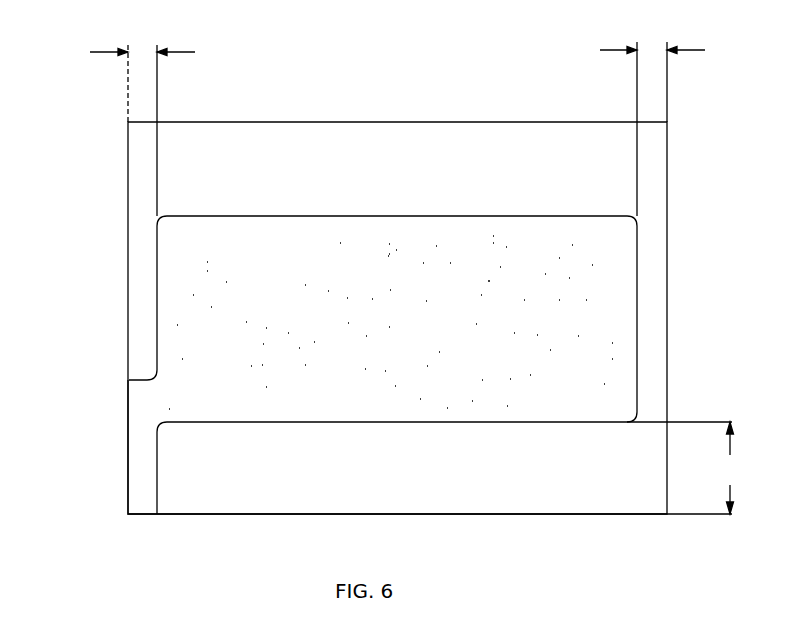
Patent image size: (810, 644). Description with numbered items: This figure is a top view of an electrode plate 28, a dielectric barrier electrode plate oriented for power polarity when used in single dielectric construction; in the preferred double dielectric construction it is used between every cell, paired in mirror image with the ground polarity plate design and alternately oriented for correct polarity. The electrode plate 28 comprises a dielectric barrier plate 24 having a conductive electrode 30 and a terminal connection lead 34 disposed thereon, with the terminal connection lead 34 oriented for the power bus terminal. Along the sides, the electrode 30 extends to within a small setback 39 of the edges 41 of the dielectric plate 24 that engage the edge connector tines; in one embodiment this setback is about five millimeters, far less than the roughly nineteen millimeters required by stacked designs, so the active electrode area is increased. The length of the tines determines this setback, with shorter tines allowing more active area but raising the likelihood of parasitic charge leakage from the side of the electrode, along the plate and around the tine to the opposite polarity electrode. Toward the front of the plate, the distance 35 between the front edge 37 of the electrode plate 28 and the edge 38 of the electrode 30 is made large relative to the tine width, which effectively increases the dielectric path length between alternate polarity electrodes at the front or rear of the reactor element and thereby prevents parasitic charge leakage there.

The electrode plate 28 is at (262, 56).
The dielectric barrier plate 24 is at (142, 207).
The edges of the dielectric plate 41 is at (128, 160).
The setback 39 is at (142, 57).
The electrode 30 is at (182, 362).
The edge of the electrode 38 is at (500, 422).
The distance 35 is at (691, 468).
The front edge 37 is at (575, 515).
The terminal connection lead 34 is at (142, 503).